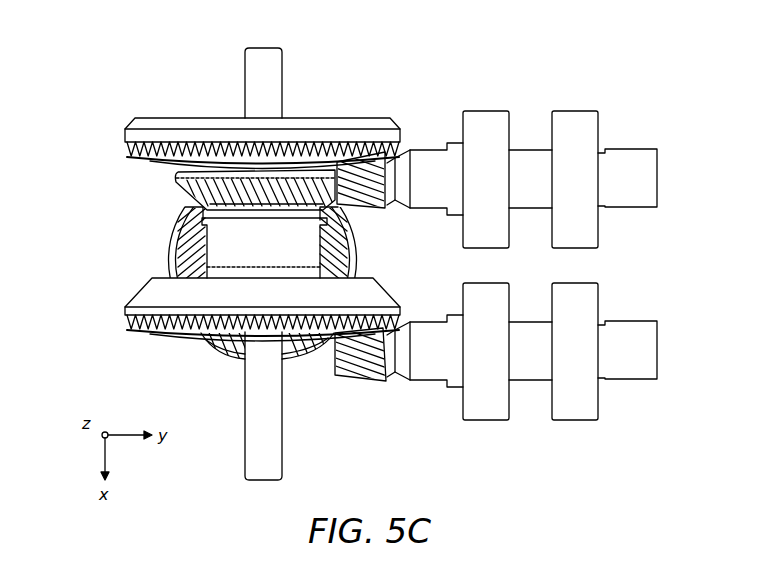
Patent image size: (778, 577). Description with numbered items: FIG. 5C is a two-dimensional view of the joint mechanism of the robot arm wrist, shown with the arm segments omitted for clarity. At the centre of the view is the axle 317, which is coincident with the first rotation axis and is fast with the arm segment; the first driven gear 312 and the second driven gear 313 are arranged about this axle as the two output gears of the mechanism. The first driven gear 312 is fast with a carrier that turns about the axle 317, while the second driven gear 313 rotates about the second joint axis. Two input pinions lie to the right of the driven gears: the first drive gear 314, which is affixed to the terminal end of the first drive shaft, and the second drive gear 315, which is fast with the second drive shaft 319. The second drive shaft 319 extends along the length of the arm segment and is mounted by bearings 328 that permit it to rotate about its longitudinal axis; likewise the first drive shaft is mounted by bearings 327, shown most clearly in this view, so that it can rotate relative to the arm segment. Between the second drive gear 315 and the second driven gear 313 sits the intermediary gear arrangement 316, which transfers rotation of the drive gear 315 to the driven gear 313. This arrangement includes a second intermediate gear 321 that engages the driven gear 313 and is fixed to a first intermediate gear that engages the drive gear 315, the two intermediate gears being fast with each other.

The first driven gear 312 is at (150, 296).
The second driven gear 313 is at (233, 352).
The first drive gear 314 is at (353, 372).
The second drive gear 315 is at (363, 208).
The intermediary gear arrangement 316 is at (123, 175).
The axle 317 is at (245, 66).
The second drive shaft 319 is at (648, 352).
The second intermediate gear 321 is at (178, 186).
The bearings 327 is at (573, 420).
The bearings 328 is at (573, 118).